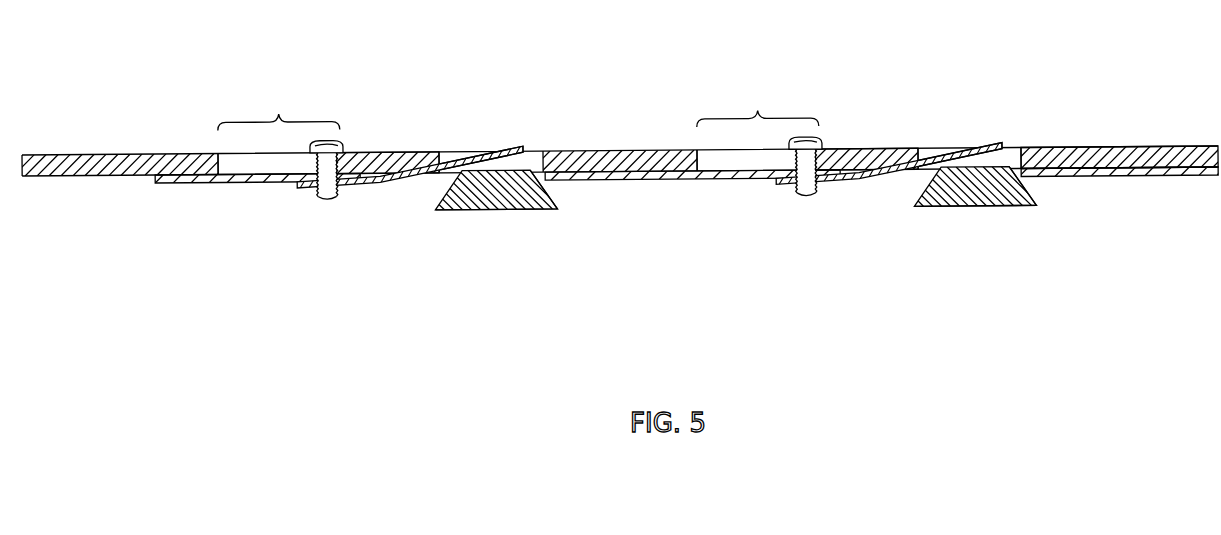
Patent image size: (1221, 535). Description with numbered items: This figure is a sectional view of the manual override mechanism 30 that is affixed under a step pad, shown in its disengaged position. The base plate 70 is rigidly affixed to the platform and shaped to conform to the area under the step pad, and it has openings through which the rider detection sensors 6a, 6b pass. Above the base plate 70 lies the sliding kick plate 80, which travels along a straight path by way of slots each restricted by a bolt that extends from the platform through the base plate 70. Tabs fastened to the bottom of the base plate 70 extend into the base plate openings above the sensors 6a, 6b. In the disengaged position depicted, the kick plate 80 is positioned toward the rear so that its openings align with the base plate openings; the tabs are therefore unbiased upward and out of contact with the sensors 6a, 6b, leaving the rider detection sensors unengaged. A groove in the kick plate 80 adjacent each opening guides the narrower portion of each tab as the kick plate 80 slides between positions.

The manual override mechanism 30 is at (1060, 134).
The kick plate 80 is at (70, 138).
The base plate 70 is at (158, 191).
The rider detection sensor 6a is at (505, 214).
The rider detection sensor 6b is at (971, 209).